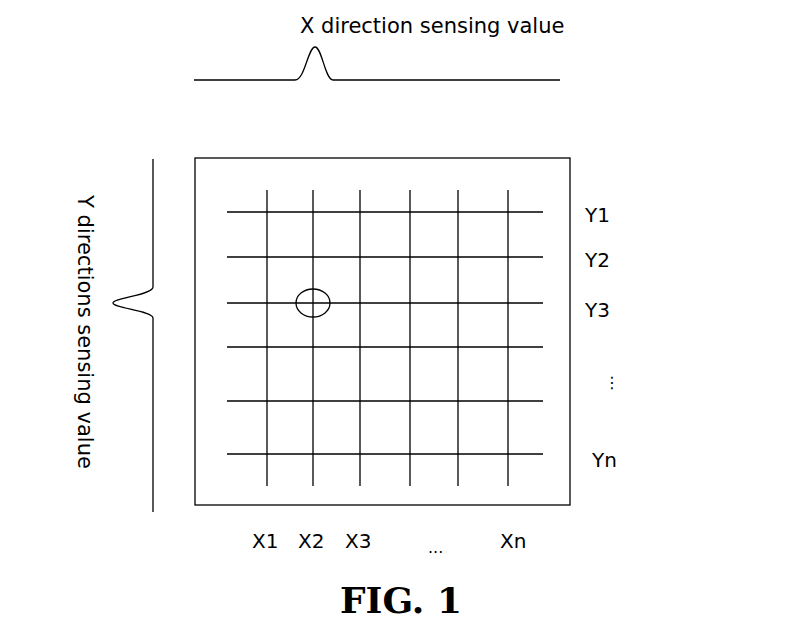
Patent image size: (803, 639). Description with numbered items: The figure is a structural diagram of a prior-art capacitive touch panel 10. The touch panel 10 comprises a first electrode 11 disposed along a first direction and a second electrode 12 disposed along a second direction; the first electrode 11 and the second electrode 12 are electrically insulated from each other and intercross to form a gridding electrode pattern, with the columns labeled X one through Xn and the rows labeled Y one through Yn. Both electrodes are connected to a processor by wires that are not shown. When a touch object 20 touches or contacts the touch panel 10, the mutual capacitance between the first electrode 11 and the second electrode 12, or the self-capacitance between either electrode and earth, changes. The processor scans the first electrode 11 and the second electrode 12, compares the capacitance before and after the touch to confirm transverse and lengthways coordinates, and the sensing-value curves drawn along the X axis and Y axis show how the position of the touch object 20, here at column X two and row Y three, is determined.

The touch panel 10 is at (720, 77).
The first electrode 11 is at (458, 200).
The second electrode 12 is at (535, 210).
The touch object 20 is at (313, 303).